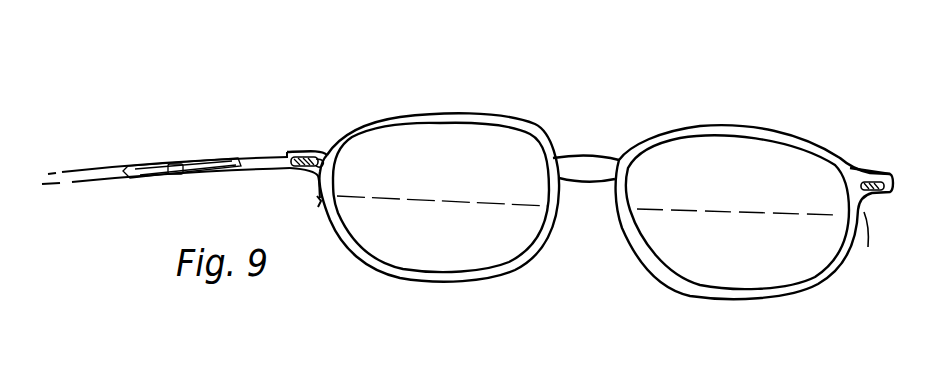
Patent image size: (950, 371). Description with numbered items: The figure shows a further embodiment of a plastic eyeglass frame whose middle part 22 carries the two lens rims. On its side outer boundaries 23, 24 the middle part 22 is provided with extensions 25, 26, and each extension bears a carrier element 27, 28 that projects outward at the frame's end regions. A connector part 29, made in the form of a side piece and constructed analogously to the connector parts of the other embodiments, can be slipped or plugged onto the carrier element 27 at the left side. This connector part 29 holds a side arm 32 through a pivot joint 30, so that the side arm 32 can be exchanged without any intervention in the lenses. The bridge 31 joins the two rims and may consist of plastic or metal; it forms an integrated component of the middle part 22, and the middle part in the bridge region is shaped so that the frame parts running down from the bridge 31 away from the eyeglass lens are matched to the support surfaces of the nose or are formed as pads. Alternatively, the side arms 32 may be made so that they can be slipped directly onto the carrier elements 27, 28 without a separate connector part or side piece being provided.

The middle part 22 is at (625, 138).
The side outer boundary 23 is at (318, 203).
The side outer boundary 24 is at (868, 247).
The extension 25 is at (310, 155).
The extension 26 is at (856, 172).
The carrier element 27 is at (302, 164).
The carrier element 28 is at (877, 191).
The connector part 29 is at (273, 162).
The pivot joint 30 is at (243, 181).
The bridge 31 is at (578, 167).
The side arm 32 is at (147, 173).